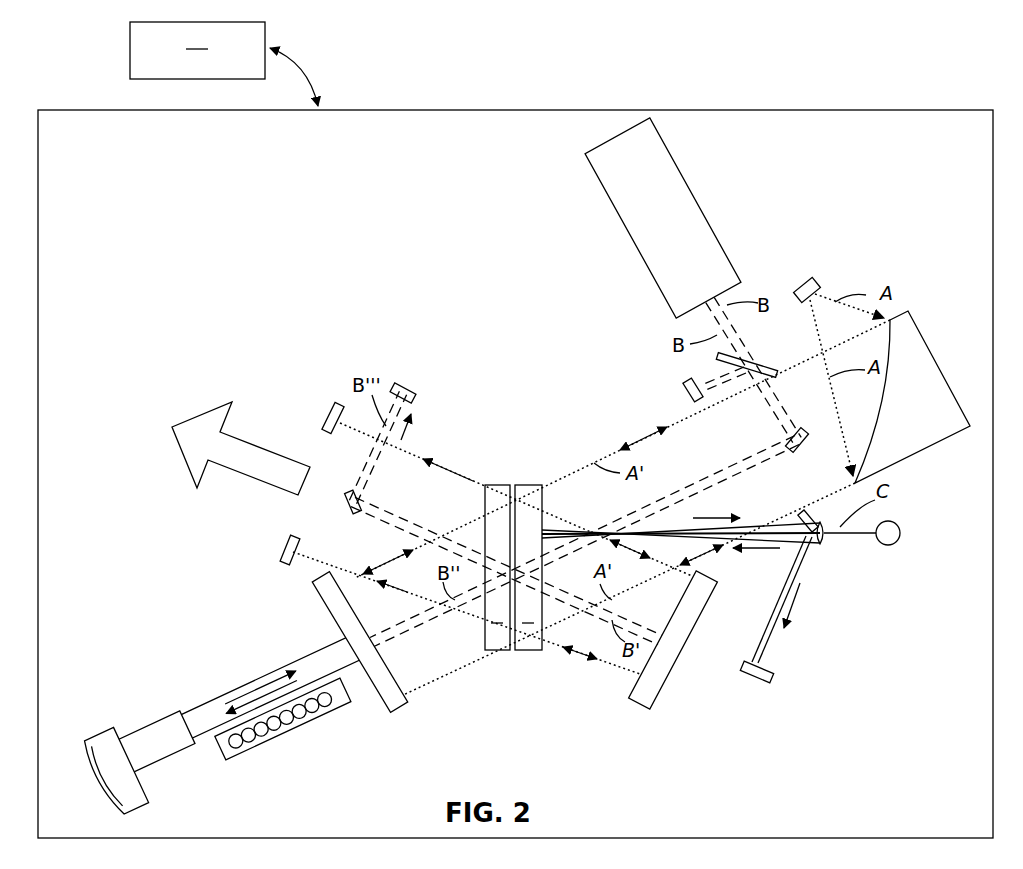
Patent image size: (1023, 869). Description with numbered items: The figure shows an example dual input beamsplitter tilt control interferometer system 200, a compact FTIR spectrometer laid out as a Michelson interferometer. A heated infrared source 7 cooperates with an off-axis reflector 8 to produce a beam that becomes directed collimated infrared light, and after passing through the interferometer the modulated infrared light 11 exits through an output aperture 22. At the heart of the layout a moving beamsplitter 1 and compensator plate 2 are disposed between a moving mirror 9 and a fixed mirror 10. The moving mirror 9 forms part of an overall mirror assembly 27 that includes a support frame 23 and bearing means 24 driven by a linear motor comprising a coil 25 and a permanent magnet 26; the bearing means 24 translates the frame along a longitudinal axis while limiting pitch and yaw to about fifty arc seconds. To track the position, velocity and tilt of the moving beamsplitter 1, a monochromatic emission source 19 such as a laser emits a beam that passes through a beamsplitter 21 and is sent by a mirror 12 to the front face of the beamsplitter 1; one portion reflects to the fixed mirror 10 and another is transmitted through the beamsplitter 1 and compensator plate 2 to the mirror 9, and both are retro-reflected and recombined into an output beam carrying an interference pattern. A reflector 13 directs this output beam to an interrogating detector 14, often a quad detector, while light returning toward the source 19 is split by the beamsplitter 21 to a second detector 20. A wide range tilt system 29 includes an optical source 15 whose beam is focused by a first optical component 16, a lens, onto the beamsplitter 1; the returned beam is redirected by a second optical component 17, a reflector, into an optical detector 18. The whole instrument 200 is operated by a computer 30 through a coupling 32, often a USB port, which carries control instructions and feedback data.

The moving beamsplitter 1 is at (528, 567).
The compensator plate 2 is at (497, 567).
The infrared source 7 is at (818, 282).
The off-axis reflector 8 is at (932, 352).
The moving mirror 9 is at (400, 705).
The fixed mirror 10 is at (670, 700).
The modulated infrared light 11 is at (178, 450).
The mirror 12 is at (805, 442).
The reflector 13 is at (350, 512).
The interrogating detector 14 is at (400, 384).
The optical source 15 is at (902, 532).
The first optical component 16 is at (820, 546).
The second optical component 17 is at (800, 515).
The optical detector 18 is at (758, 682).
The monochromatic emission source 19 is at (702, 208).
The second detector 20 is at (683, 393).
The beamsplitter 21 is at (762, 358).
The output aperture 22 is at (333, 406).
The support frame 23 is at (246, 699).
The bearing means 24 is at (283, 719).
The coil 25 is at (114, 772).
The permanent magnet 26 is at (153, 743).
The mirror assembly 27 is at (233, 726).
The wide range tilt system 29 is at (857, 621).
The computer 30 is at (197, 50).
The coupling 32 is at (305, 70).
The interferometer system 200 is at (202, 192).